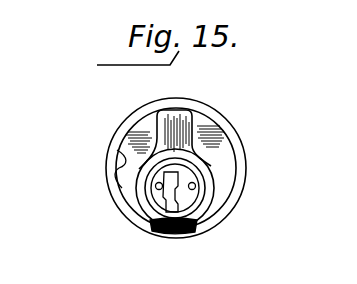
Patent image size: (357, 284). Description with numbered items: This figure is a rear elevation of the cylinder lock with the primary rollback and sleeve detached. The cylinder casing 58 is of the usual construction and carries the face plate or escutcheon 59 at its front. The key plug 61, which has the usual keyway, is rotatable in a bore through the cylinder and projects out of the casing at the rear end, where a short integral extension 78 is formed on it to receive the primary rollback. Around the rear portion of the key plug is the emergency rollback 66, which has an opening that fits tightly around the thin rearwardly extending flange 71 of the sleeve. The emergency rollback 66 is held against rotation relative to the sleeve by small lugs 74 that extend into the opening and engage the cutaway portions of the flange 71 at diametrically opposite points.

The cylinder casing 58 is at (200, 137).
The face plate or escutcheon 59 is at (108, 177).
The key plug 61 is at (222, 208).
The emergency rollback 66 is at (157, 123).
The flange 71 is at (149, 187).
The lugs 74 is at (201, 148).
The extension 78 is at (226, 166).